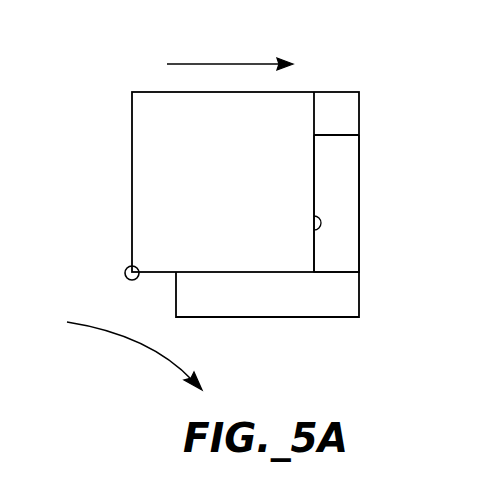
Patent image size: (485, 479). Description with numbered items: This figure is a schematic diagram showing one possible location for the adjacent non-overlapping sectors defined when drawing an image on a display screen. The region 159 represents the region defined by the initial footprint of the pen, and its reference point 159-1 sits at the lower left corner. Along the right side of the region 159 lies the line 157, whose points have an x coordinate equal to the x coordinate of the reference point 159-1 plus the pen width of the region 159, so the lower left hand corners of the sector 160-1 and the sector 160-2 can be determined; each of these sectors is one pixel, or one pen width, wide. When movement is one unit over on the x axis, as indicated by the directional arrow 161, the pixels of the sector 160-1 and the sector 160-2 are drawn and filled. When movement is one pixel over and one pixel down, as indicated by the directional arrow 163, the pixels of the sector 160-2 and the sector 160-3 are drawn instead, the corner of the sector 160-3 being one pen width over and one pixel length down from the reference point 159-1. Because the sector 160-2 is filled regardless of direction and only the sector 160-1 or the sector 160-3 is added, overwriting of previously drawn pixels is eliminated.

The line 157 is at (314, 218).
The region 159 is at (245, 182).
The reference point 159-1 is at (125, 268).
The sector 160-1 is at (348, 112).
The sector 160-2 is at (348, 188).
The sector 160-3 is at (348, 286).
The directional arrow 161 is at (180, 62).
The directional arrow 163 is at (163, 352).